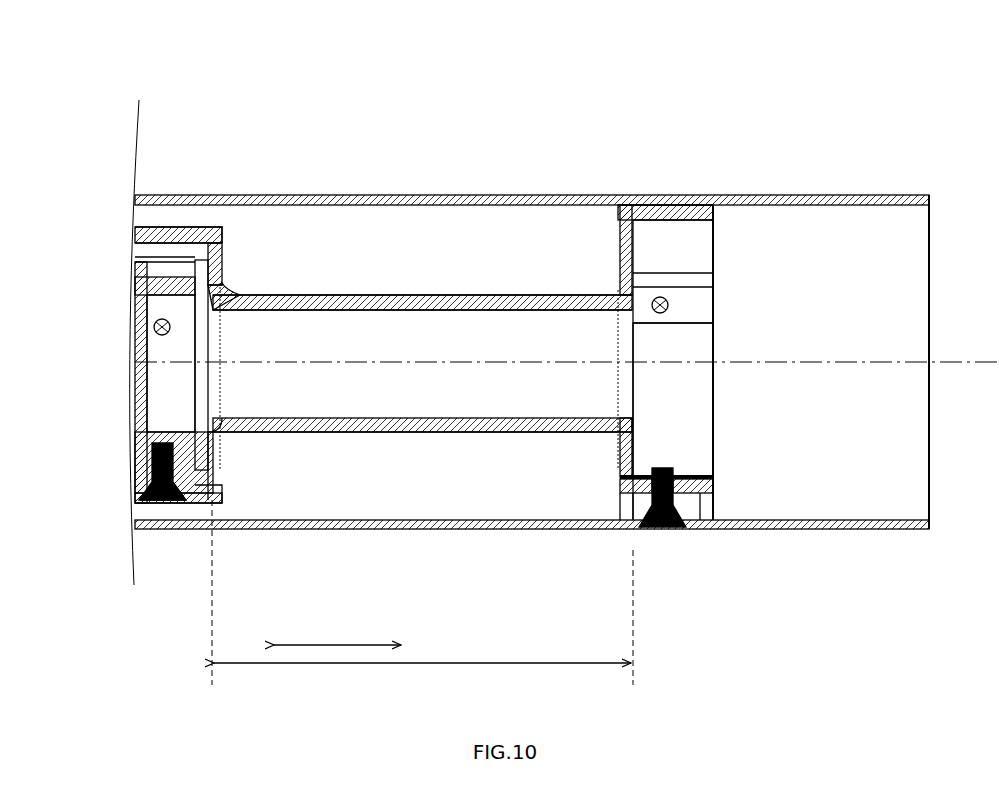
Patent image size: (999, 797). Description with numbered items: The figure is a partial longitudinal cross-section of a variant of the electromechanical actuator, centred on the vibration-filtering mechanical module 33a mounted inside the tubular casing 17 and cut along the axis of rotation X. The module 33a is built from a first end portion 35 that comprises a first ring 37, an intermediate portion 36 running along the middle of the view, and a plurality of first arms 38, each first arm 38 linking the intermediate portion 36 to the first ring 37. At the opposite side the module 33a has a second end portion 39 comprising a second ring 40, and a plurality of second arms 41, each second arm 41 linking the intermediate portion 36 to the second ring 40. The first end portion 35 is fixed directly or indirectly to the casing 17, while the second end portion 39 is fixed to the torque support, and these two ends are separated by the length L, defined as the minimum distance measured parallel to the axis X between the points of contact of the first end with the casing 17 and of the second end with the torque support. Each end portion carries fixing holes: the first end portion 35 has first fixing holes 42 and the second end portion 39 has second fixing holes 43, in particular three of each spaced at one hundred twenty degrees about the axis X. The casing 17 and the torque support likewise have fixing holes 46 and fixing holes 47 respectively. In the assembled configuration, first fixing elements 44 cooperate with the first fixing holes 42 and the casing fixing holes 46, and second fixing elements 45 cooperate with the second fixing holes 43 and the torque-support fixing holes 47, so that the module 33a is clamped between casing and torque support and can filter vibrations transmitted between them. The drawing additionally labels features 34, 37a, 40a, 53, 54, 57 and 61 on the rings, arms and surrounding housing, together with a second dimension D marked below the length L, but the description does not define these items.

The casing 17 is at (505, 197).
The vibration-filtering mechanical module 33a is at (340, 273).
The inner tube 34 is at (392, 296).
The first end portion 35 is at (660, 210).
The intermediate portion 36 is at (442, 296).
The first ring 37 is at (700, 208).
The end block inner surface 37a is at (679, 224).
The first arms 38 is at (625, 236).
The second end portion 39 is at (160, 236).
The second ring 40 is at (197, 228).
The end piece inner surface 40a is at (196, 246).
The second arms 41 is at (265, 288).
The first fixing holes 42 is at (668, 308).
The second fixing holes 43 is at (172, 334).
The first fixing elements 44 is at (640, 545).
The second fixing elements 45 is at (175, 505).
The fixing holes of the casing 46 is at (690, 530).
The fixing holes of the torque support 47 is at (163, 440).
The tube bottom wall 53 is at (420, 432).
The piston 54 is at (222, 340).
The end wall 57 is at (143, 247).
The chamber 61 is at (676, 414).
The axis of rotation X is at (903, 362).
The length L is at (422, 592).
The distance D is at (337, 629).